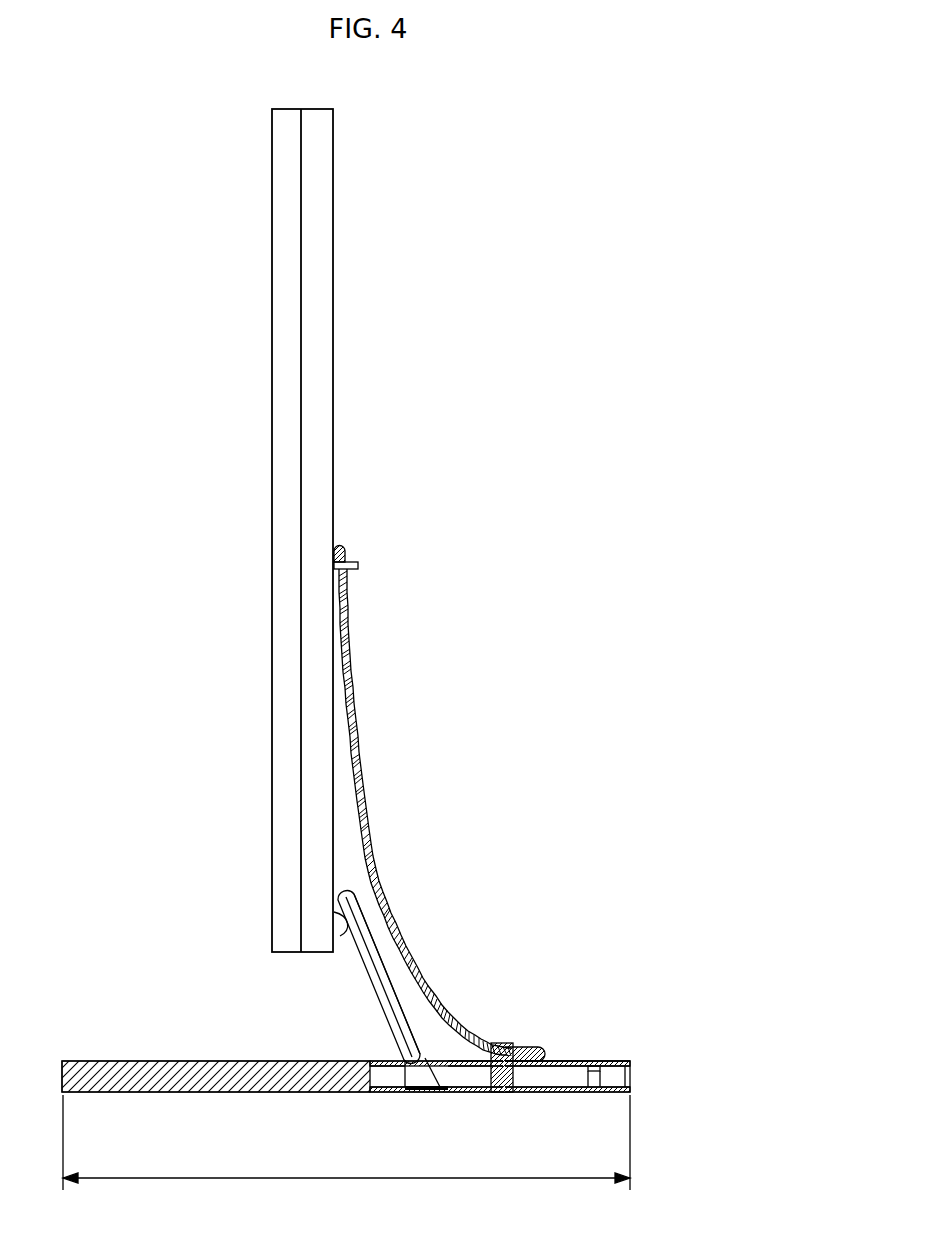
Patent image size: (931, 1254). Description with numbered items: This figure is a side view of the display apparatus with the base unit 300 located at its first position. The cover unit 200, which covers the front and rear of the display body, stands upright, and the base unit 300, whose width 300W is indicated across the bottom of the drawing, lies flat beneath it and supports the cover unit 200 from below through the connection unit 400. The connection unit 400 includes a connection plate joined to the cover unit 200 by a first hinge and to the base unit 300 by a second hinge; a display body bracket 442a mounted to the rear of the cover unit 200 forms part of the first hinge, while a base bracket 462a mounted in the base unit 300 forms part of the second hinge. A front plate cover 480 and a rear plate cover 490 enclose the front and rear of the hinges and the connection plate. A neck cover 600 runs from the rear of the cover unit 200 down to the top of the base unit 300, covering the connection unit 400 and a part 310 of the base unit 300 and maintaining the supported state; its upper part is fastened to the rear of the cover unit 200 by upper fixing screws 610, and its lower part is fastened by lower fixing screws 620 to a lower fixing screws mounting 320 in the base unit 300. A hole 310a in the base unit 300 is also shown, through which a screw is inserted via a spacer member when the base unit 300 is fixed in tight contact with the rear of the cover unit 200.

The cover unit 200 is at (272, 362).
The base unit 300 is at (197, 1059).
The width of base unit 300W is at (346, 1152).
The part of base unit 310 is at (563, 1061).
The hole 310a is at (600, 1062).
The lower fixing screws mounting 320 is at (504, 1043).
The connection unit 400 is at (372, 1011).
The display body bracket 442a is at (335, 880).
The base bracket 462a is at (413, 1092).
The front plate cover 480 is at (383, 960).
The rear plate cover 490 is at (363, 977).
The neck cover 600 is at (362, 773).
The upper fixing screws 610 is at (358, 563).
The lower fixing screws 620 is at (503, 1043).